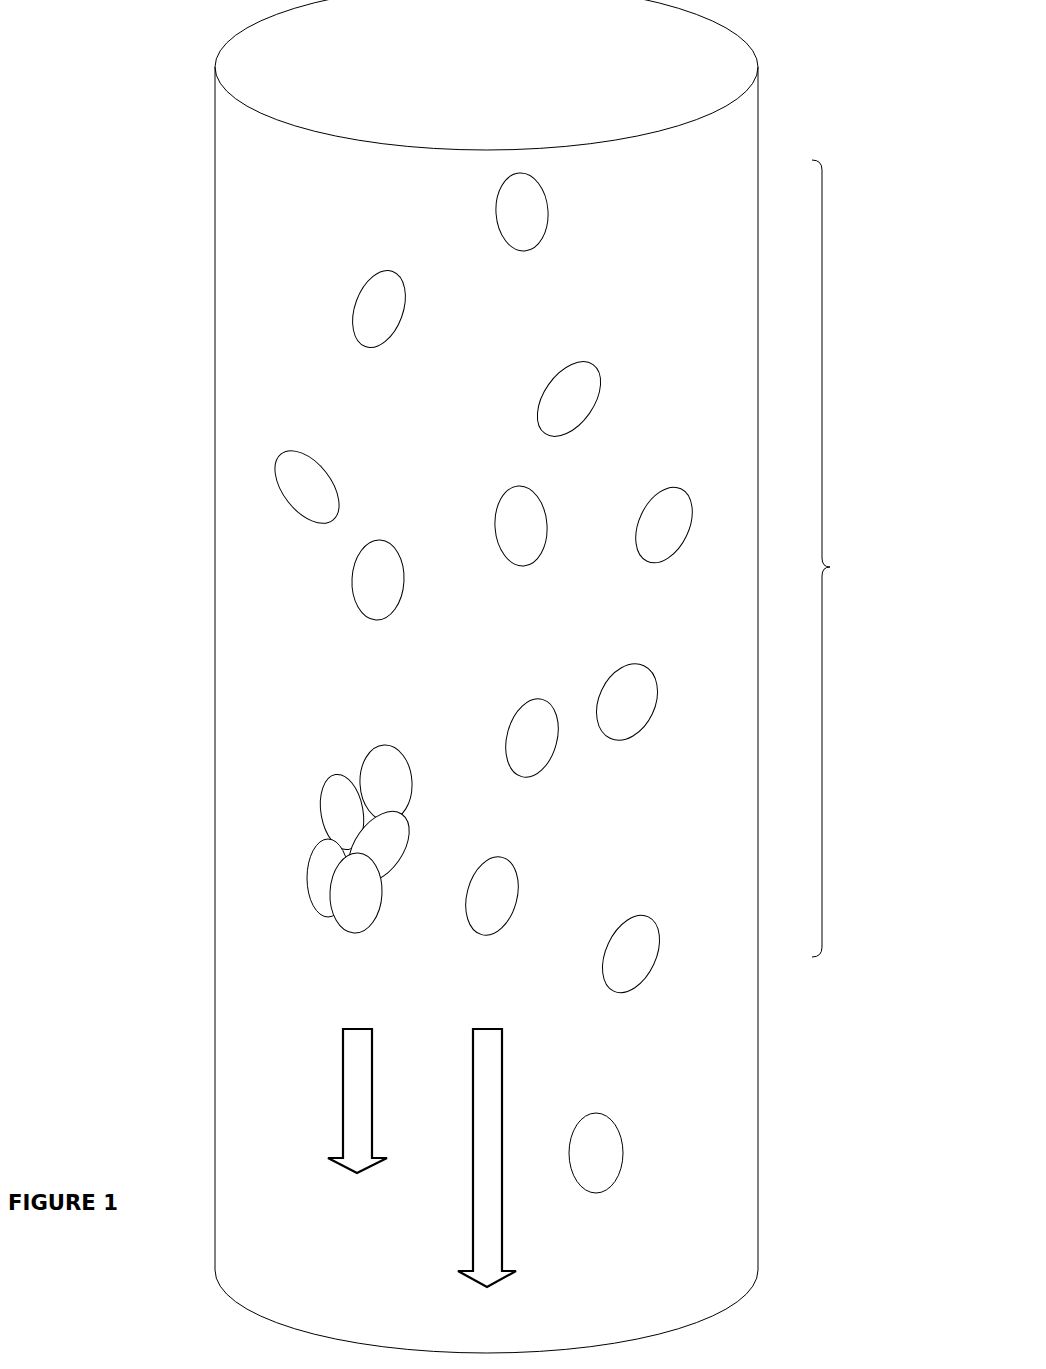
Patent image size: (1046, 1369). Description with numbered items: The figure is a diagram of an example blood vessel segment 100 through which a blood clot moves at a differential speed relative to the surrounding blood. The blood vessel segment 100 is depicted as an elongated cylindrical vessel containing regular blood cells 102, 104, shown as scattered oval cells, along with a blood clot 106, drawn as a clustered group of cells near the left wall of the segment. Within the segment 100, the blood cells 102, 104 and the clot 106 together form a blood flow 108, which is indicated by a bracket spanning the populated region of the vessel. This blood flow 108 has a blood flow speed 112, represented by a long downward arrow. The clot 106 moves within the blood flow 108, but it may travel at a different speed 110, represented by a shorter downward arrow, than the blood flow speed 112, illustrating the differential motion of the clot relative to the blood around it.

The blood vessel segment 100 is at (216, 667).
The blood cell 102 is at (522, 212).
The blood cell 104 is at (379, 309).
The blood clot 106 is at (378, 848).
The blood flow 108 is at (869, 558).
The clot speed 110 is at (372, 1084).
The blood flow speed 112 is at (502, 1245).